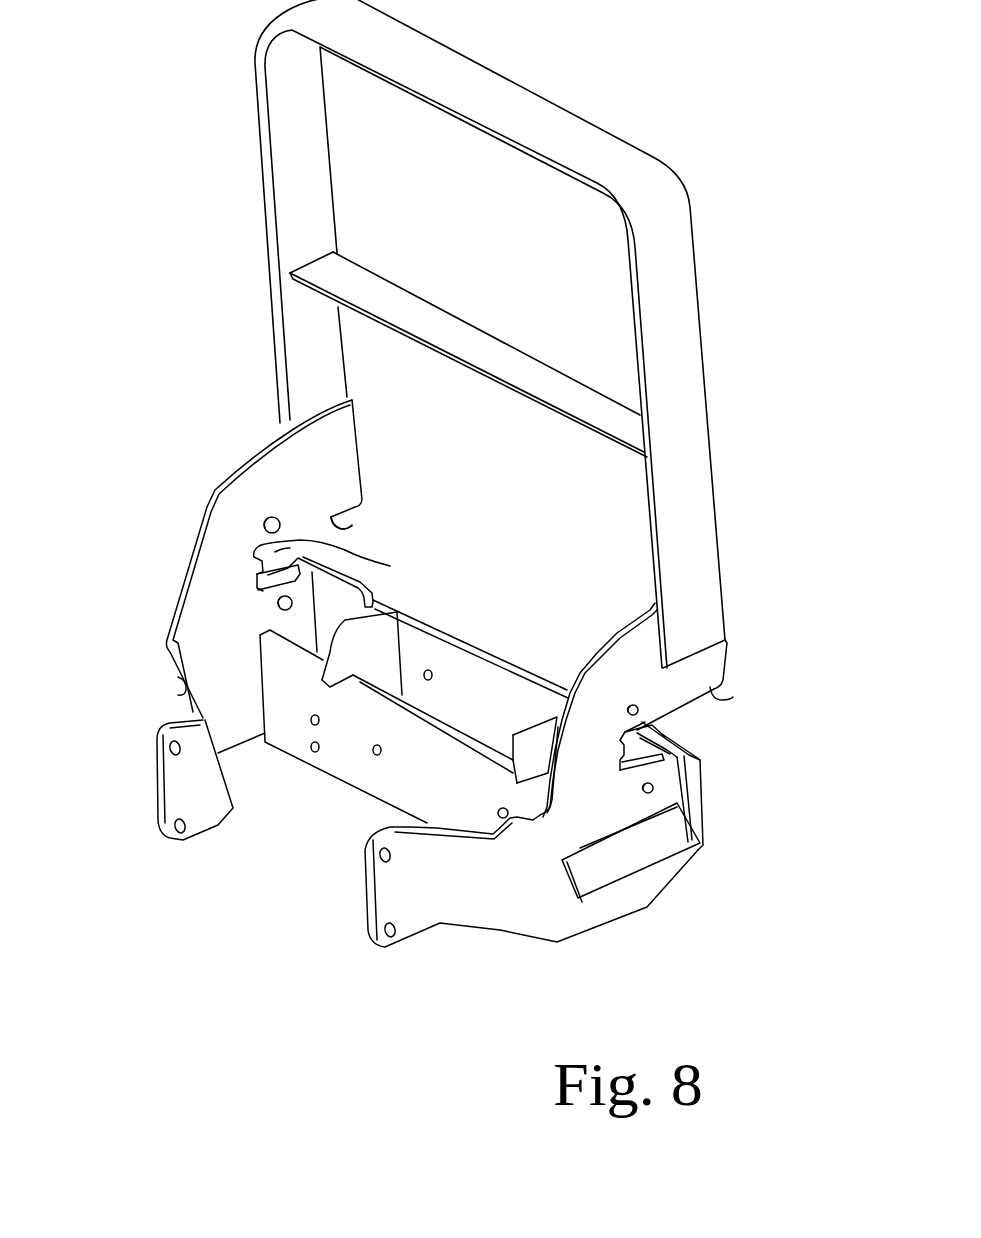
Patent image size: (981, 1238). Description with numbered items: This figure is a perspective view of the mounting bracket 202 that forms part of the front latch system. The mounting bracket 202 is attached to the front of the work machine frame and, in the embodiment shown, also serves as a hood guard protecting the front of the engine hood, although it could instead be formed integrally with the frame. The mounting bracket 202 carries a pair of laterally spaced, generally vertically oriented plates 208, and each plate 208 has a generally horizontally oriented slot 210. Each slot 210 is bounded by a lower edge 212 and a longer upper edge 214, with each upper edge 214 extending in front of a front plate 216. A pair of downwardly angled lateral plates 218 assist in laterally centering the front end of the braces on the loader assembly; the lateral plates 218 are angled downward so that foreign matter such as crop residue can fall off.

The mounting bracket 202 is at (217, 433).
The plate 208 is at (237, 527).
The slot 210 is at (390, 566).
The lower edge 212 is at (258, 573).
The upper edge 214 is at (352, 524).
The front plate 216 is at (703, 807).
The lateral plate 218 is at (667, 850).